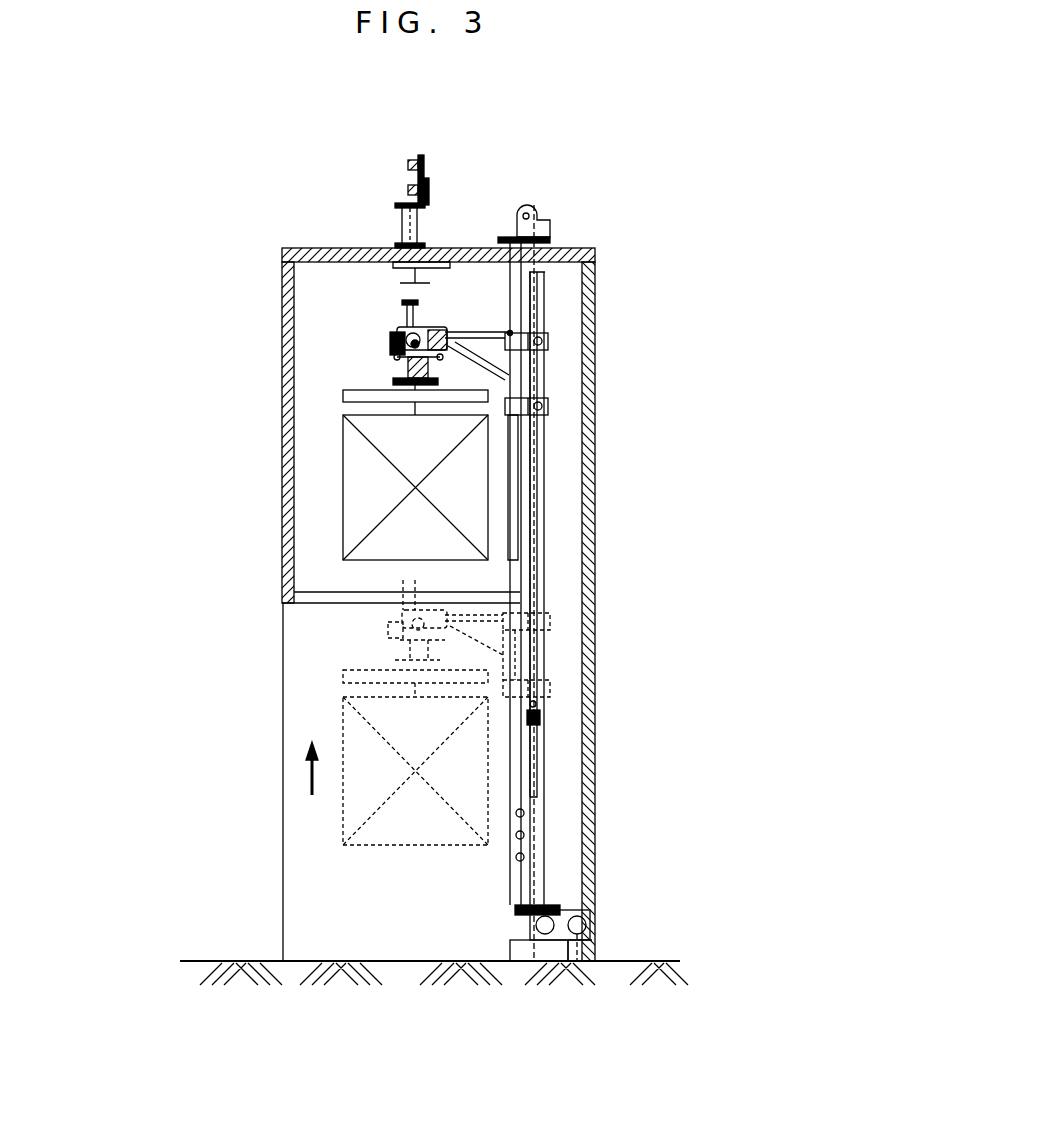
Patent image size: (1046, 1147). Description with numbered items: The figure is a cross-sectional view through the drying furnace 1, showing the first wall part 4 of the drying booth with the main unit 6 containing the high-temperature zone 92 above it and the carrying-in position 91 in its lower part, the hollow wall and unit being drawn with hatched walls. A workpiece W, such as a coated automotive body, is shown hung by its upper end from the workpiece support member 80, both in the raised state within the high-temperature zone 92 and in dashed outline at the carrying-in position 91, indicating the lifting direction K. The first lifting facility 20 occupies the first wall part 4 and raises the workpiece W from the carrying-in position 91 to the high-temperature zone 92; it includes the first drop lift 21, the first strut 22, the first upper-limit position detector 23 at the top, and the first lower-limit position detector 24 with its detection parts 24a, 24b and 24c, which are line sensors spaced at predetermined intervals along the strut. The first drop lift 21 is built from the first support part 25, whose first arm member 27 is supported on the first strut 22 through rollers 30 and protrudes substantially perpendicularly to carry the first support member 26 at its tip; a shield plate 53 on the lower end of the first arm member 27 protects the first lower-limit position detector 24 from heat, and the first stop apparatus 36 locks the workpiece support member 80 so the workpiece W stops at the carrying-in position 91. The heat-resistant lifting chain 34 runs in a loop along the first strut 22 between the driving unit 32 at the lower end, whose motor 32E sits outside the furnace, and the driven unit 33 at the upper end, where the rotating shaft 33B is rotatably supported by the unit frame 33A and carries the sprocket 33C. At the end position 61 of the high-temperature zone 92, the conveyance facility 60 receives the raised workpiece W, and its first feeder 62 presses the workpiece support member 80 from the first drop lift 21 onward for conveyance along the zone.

The drying furnace 1 is at (615, 160).
The first wall part 4 is at (283, 918).
The main unit 6 is at (292, 455).
The first lifting facility 20 is at (580, 582).
The first drop lift 21 is at (369, 297).
The first strut 22 is at (542, 790).
The first upper-limit position detector 23 is at (428, 165).
The first lower-limit position detector 24 is at (612, 824).
The detection part 24a is at (522, 812).
The detection part 24b is at (543, 835).
The detection part 24c is at (547, 860).
The first support part 25 is at (663, 275).
The first support member 26 is at (452, 330).
The first arm member 27 is at (483, 330).
The rollers 30 is at (548, 405).
The driving unit 32 is at (625, 968).
The motor 32E is at (577, 962).
The driven unit 33 is at (571, 187).
The unit frame 33A is at (552, 236).
The rotating shaft 33B is at (548, 222).
The sprocket 33C is at (535, 208).
The lifting chain 34 is at (552, 428).
The first stop apparatus 36 is at (400, 335).
The shield plate 53 is at (515, 480).
The conveyance facility 60 is at (447, 293).
The end position 61 is at (335, 571).
The first feeder 62 is at (390, 345).
The workpiece support member 80 is at (345, 396).
The carrying-in position 91 is at (428, 904).
The high-temperature zone 92 is at (350, 297).
The workpiece W is at (345, 497).
The lifting direction K is at (312, 775).